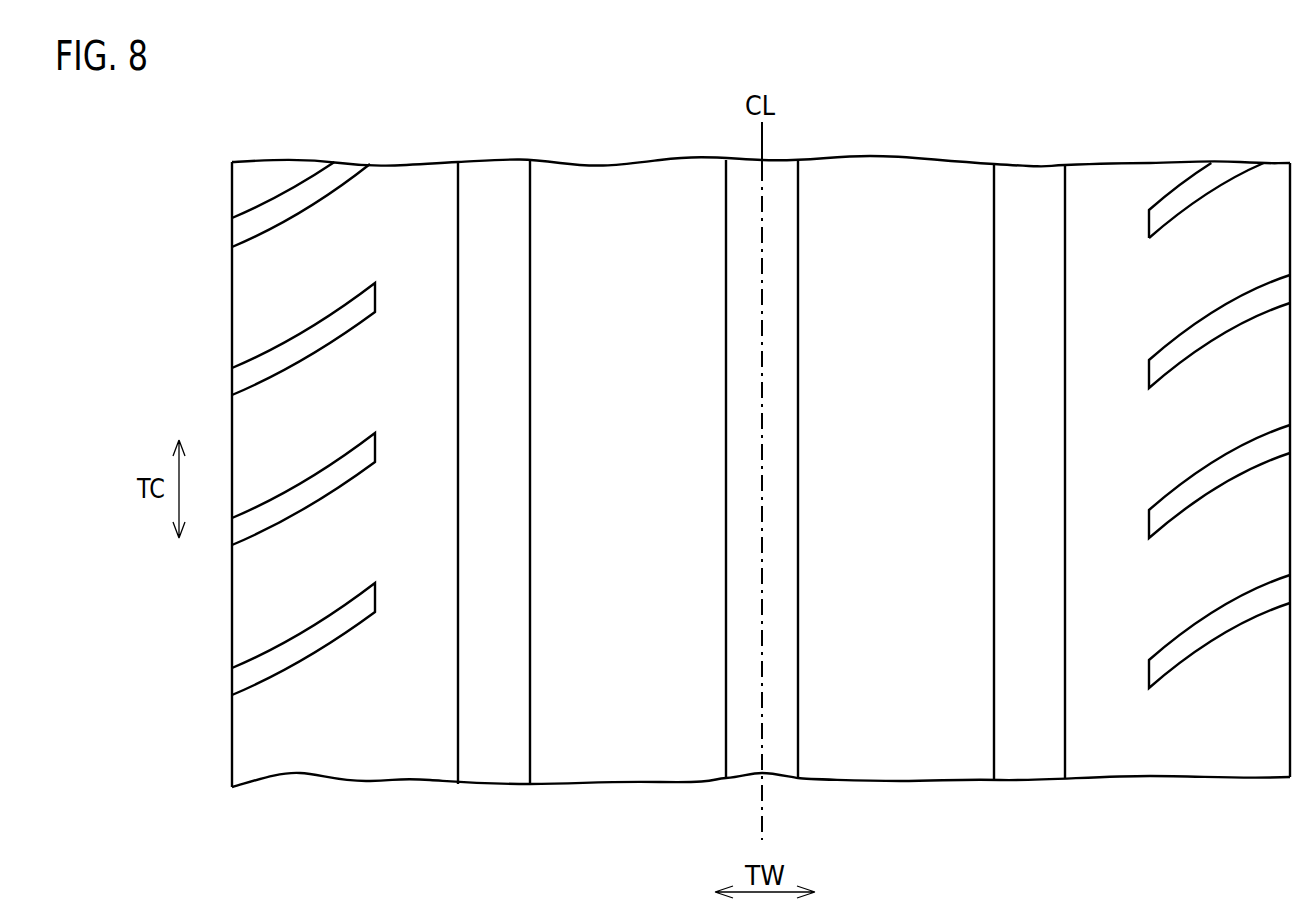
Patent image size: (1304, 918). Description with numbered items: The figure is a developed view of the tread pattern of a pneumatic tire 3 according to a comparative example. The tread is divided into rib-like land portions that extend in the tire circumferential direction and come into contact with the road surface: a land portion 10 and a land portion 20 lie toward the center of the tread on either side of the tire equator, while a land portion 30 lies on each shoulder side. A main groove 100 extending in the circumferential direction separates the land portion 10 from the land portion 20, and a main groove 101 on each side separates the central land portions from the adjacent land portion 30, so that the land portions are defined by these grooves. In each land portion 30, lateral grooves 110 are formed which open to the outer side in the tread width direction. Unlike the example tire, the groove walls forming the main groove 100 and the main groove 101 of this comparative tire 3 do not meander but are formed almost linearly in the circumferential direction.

The pneumatic tire 3 is at (893, 107).
The land portion 10 is at (645, 188).
The land portion 20 is at (953, 186).
The land portion 30 is at (403, 188).
The main groove 100 is at (773, 188).
The main groove 101 is at (497, 188).
The lateral groove 110 is at (357, 305).